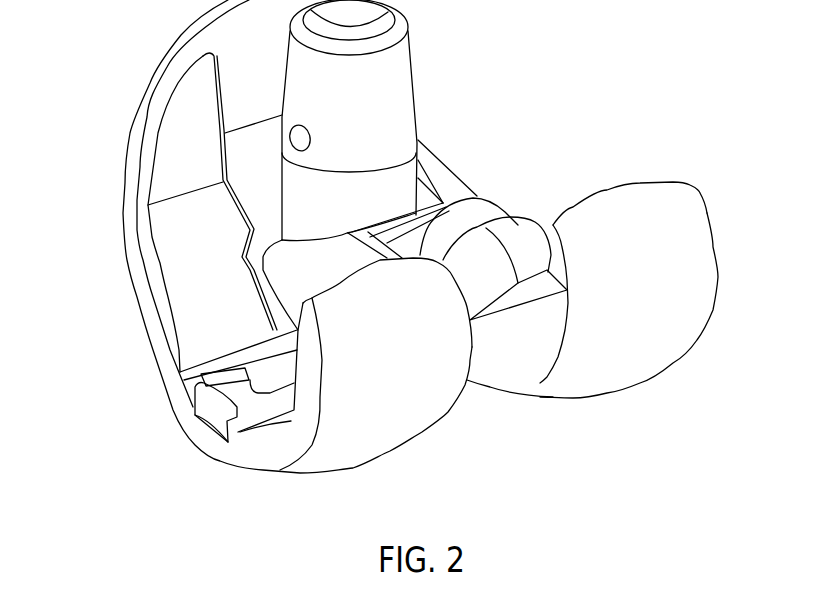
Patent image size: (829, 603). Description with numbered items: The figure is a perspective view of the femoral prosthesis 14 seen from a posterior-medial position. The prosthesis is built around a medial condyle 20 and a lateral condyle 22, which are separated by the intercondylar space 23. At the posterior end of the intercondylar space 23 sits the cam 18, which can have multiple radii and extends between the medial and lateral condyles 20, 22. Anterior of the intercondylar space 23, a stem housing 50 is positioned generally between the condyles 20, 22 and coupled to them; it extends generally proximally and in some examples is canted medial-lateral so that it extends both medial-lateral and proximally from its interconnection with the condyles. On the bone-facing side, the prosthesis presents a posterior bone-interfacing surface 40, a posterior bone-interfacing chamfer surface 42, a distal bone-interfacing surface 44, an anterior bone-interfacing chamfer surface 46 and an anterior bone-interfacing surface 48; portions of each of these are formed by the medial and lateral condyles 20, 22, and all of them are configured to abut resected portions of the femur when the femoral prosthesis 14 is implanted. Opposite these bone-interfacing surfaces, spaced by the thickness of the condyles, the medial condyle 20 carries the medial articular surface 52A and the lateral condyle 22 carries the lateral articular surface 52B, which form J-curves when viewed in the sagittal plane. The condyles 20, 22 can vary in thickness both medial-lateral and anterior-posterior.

The femoral prosthesis 14 is at (578, 27).
The cam 18 is at (513, 237).
The medial condyle 20 is at (593, 305).
The lateral condyle 22 is at (376, 381).
The intercondylar space 23 is at (476, 402).
The posterior bone-interfacing surface 40 is at (293, 347).
The posterior bone-interfacing chamfer surface 42 is at (236, 434).
The distal bone-interfacing surface 44 is at (237, 388).
The anterior bone-interfacing chamfer surface 46 is at (177, 277).
The anterior bone-interfacing surface 48 is at (172, 143).
The stem housing 50 is at (393, 97).
The medial articular surface 52A is at (647, 293).
The lateral articular surface 52B is at (400, 372).